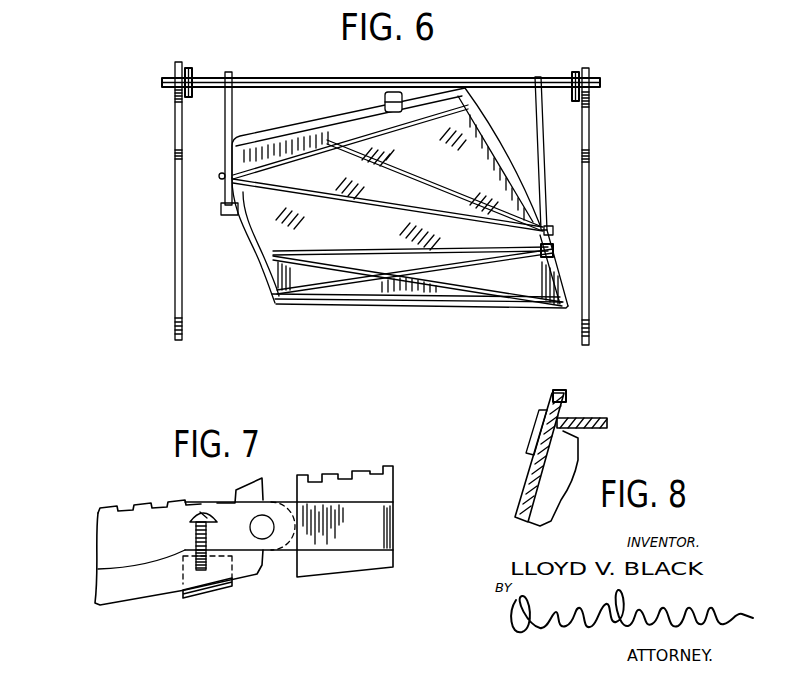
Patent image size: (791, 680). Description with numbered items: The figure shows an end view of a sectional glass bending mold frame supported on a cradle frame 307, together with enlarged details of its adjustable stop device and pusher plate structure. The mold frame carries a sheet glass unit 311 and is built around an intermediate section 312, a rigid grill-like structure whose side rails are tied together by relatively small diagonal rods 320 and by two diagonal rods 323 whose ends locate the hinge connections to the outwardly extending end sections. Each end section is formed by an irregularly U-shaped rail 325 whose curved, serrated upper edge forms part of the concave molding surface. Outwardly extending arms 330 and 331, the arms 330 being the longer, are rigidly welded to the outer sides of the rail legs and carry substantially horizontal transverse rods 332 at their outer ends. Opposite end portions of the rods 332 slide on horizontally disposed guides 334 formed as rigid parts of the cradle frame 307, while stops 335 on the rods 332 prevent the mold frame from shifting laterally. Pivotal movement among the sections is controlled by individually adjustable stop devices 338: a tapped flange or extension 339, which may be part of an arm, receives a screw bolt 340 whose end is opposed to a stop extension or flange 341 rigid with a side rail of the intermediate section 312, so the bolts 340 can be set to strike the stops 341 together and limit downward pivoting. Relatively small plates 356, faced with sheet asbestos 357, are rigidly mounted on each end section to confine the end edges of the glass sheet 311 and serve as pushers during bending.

In FIG. 6, the cradle frame 307 is at (592, 120).
In FIG. 8, the sheet glass unit 311 is at (593, 420).
In FIG. 6, the intermediate section 312 is at (567, 277).
In FIG. 7, the intermediate section 312 is at (118, 605).
In FIG. 6, the diagonal rods 320 is at (345, 308).
In FIG. 6, the rods 323 is at (380, 205).
In FIG. 6, the rails 325 is at (290, 133).
In FIG. 7, the rails 325 is at (373, 470).
In FIG. 8, the rails 325 is at (530, 485).
In FIG. 6, the arms 330 is at (538, 140).
In FIG. 6, the arms 331 is at (225, 118).
In FIG. 7, the arms 331 is at (327, 510).
In FIG. 6, the transverse rods 332 is at (162, 81).
In FIG. 6, the guides 334 is at (590, 98).
In FIG. 6, the stops 335 is at (190, 70).
In FIG. 7, the stop devices 338 is at (98, 570).
In FIG. 7, the flange or extension 339 is at (196, 539).
In FIG. 7, the screw bolts 340 is at (198, 507).
In FIG. 6, the stop extensions or flanges 341 is at (553, 253).
In FIG. 7, the stop extensions or flanges 341 is at (197, 600).
In FIG. 6, the plates 356 is at (404, 96).
In FIG. 8, the plates 356 is at (548, 425).
In FIG. 8, the asbestos 357 is at (563, 400).